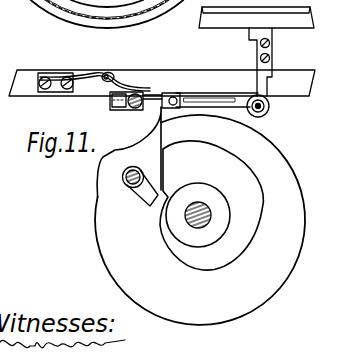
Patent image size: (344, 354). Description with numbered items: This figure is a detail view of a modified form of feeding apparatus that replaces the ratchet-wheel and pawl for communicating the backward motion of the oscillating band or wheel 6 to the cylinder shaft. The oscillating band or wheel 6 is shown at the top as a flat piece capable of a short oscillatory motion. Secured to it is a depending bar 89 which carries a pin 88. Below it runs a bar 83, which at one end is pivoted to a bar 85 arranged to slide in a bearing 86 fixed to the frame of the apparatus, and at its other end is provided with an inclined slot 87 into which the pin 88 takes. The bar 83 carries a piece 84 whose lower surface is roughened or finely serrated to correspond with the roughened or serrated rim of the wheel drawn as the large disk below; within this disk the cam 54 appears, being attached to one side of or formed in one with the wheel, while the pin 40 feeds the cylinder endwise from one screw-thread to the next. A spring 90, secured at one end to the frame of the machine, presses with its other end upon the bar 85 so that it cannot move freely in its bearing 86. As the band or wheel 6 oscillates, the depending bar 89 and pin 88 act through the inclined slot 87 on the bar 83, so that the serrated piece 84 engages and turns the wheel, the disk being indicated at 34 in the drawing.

The oscillating band or wheel 6 is at (296, 22).
The disk 34 is at (200, 216).
The pin 40 is at (162, 163).
The cam 54 is at (211, 215).
The bar 83 is at (214, 101).
The piece 84 is at (208, 104).
The bar 85 is at (151, 97).
The bearing 86 is at (122, 108).
The inclined slot 87 is at (266, 115).
The pin 88 is at (270, 106).
The depending bar 89 is at (257, 54).
The spring 90 is at (84, 77).